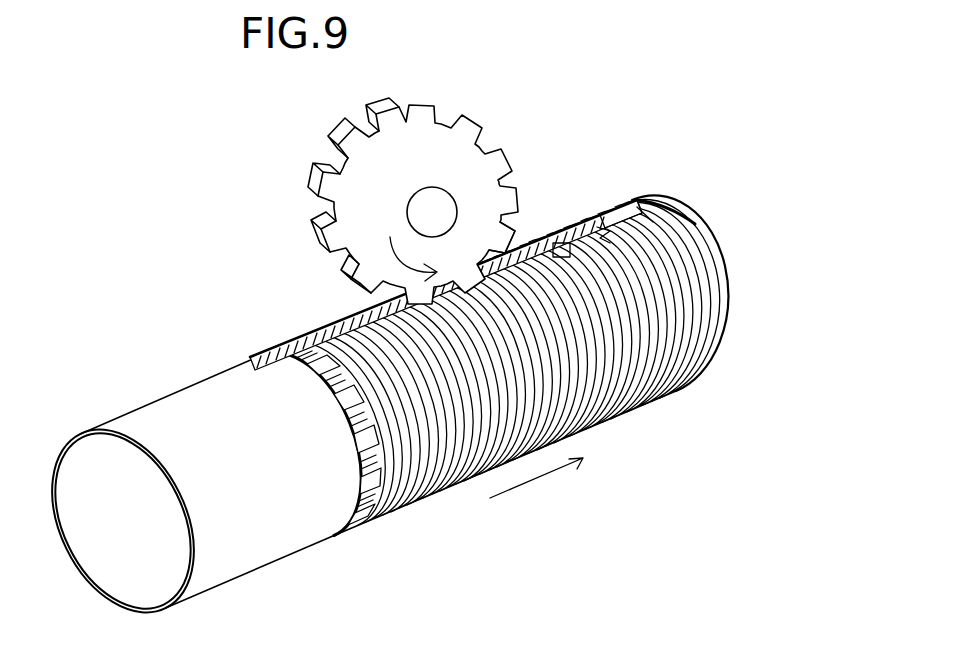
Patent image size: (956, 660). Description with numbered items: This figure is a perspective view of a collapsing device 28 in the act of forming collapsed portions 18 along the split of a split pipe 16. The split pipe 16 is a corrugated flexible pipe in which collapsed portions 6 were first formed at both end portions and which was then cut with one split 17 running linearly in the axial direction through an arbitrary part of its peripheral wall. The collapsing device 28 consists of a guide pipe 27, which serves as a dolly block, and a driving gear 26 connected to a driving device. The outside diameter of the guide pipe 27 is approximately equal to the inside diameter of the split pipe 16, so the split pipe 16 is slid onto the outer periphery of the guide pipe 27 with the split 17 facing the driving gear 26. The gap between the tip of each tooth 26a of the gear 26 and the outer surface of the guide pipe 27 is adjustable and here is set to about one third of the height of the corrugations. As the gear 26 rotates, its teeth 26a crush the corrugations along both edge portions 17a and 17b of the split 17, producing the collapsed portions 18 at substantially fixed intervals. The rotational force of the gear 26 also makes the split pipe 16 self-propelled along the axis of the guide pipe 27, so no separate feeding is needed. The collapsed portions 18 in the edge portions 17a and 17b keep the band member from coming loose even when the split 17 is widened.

The collapsed portion 6 is at (376, 456).
The split pipe 16 is at (496, 377).
The split 17 is at (303, 345).
The edge portion 17a is at (652, 203).
The edge portion 17b is at (630, 200).
The collapsed portion 18 is at (633, 260).
The driving gear 26 is at (443, 198).
The tooth 26a is at (500, 237).
The guide pipe 27 is at (273, 535).
The collapsing device 28 is at (443, 160).